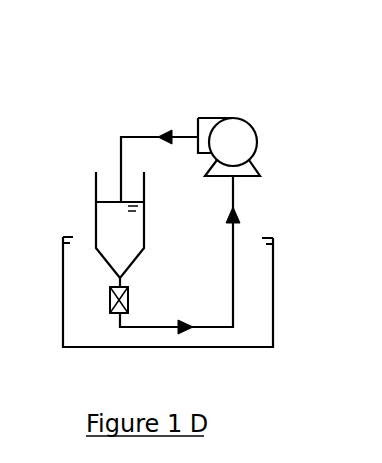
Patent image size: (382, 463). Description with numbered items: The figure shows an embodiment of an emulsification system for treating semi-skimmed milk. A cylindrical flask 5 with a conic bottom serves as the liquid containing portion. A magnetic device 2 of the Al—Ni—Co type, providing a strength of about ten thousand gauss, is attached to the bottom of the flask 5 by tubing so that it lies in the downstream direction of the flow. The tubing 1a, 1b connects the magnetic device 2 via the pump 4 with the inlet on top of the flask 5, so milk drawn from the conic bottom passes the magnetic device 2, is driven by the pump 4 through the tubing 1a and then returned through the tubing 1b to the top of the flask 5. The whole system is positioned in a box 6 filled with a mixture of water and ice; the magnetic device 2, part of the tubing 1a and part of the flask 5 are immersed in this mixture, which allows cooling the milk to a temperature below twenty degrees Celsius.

The tubing 1a is at (233, 198).
The tubing 1b is at (128, 130).
The magnetic device 2 is at (130, 295).
The pump 4 is at (242, 120).
The cylindrical flask 5 is at (93, 220).
The box 6 is at (273, 305).